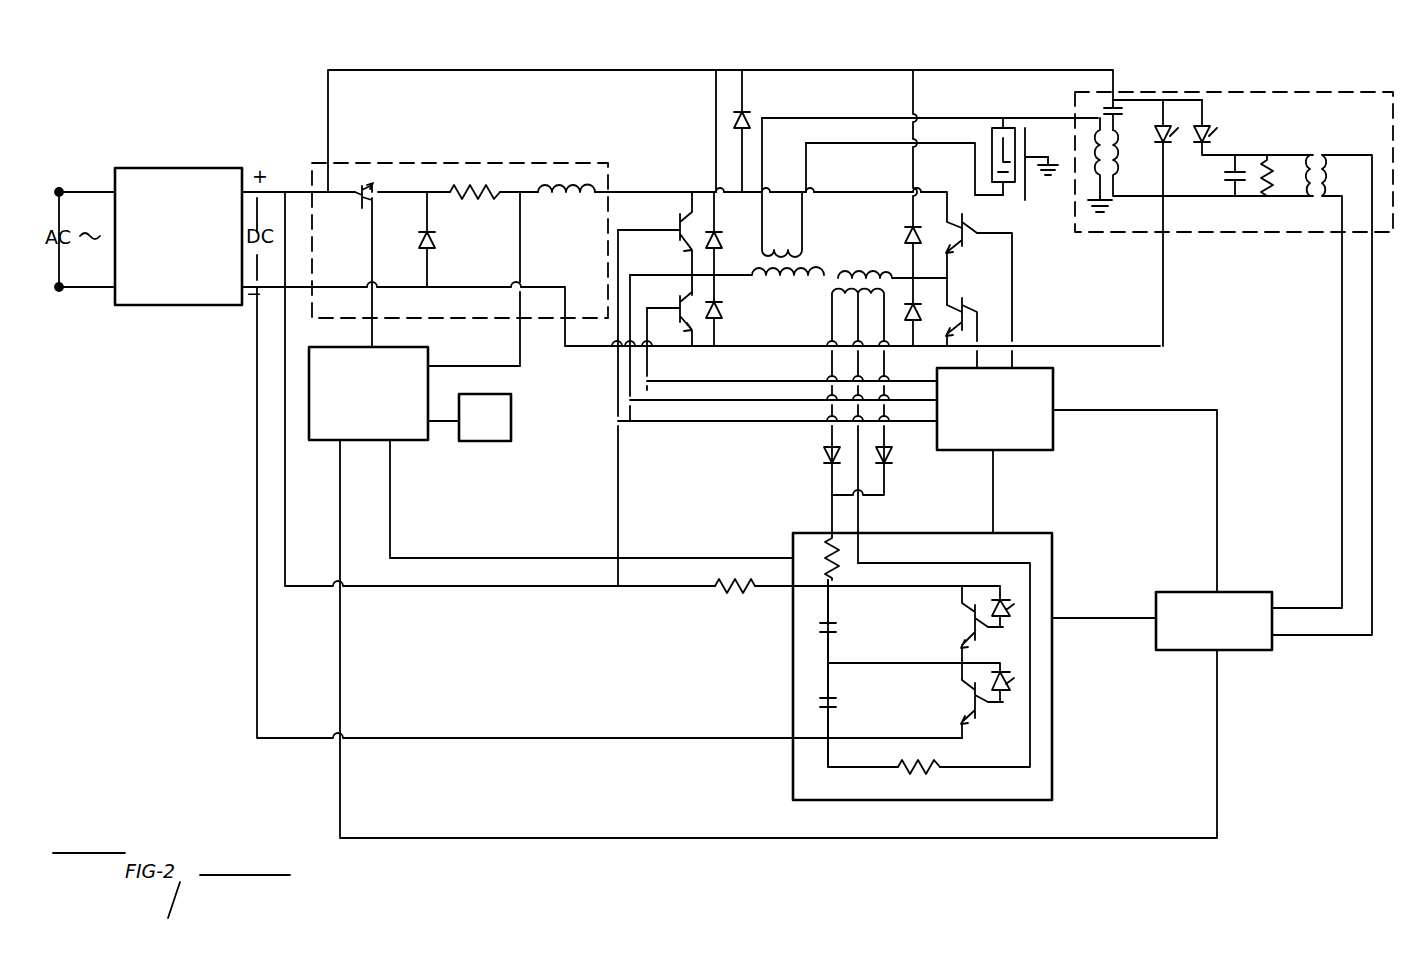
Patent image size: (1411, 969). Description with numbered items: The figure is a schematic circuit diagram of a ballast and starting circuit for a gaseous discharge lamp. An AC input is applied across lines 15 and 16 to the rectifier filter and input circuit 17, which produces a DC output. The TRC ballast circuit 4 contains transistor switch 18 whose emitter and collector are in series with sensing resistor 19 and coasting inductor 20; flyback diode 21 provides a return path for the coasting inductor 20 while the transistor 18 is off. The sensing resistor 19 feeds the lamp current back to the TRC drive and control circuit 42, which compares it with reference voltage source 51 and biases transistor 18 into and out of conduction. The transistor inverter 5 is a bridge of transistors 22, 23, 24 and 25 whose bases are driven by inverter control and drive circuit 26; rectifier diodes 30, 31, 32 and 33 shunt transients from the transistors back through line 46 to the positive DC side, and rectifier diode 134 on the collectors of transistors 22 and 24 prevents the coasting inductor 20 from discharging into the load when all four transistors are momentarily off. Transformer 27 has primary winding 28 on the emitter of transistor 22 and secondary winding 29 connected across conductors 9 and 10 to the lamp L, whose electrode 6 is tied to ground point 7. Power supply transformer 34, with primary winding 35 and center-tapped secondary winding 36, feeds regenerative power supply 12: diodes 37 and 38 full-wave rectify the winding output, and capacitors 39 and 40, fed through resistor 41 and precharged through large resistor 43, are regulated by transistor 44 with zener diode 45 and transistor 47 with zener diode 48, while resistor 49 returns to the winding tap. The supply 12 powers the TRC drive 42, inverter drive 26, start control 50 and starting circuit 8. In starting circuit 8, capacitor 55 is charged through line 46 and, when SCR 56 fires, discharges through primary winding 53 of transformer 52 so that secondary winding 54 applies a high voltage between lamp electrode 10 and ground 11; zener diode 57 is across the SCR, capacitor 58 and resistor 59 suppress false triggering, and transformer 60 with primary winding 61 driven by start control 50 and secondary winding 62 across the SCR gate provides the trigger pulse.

The TRC ballast circuit 4 is at (528, 162).
The transistor inverter 5 is at (849, 222).
The lamp electrode 6 is at (1028, 178).
The ground point 7 is at (1048, 184).
The starting circuit 8 is at (1288, 90).
The conductor 9 is at (998, 202).
The conductor (lamp electrode) 10 is at (1002, 120).
The ground 11 is at (1104, 214).
The regenerative power supply circuit 12 is at (1056, 702).
The AC input line 15 is at (60, 192).
The AC input line 16 is at (62, 290).
The rectifier filter and input circuit 17 is at (176, 168).
The transistor switch 18 is at (370, 190).
The sensing resistor 19 is at (472, 203).
The coasting inductor 20 is at (572, 200).
The flyback diode 21 is at (416, 238).
The transistor 22 is at (670, 222).
The transistor 23 is at (670, 304).
The transistor 24 is at (960, 200).
The transistor 25 is at (964, 296).
The inverter control and drive circuit 26 is at (1058, 432).
The transformer 27 is at (816, 260).
The primary winding 28 is at (784, 280).
The secondary winding 29 is at (796, 222).
The rectifier diode 30 is at (724, 236).
The rectifier diode 31 is at (724, 320).
The rectifier diode 32 is at (902, 228).
The rectifier diode 33 is at (926, 312).
The power supply transformer 34 is at (828, 294).
The primary winding 35 is at (865, 274).
The secondary winding 36 is at (834, 310).
The diode 37 is at (808, 454).
The diode 38 is at (894, 458).
The capacitor 39 is at (830, 630).
The capacitor 40 is at (830, 704).
The resistor 41 is at (824, 554).
The TRC drive and control circuit 42 is at (428, 359).
The resistor 43 is at (754, 590).
The transistor 44 is at (954, 624).
The zener diode 45 is at (1002, 590).
The line 46 is at (531, 70).
The transistor 47 is at (954, 696).
The zener diode 48 is at (1006, 696).
The resistor 49 is at (942, 776).
The start control circuit 50 is at (1180, 592).
The reference voltage source 51 is at (512, 416).
The transformer 52 is at (1112, 117).
The primary winding 53 is at (1122, 176).
The secondary winding 54 is at (1094, 164).
The capacitor 55 is at (1106, 104).
The SCR 56 is at (1212, 128).
The zener diode 57 is at (1170, 146).
The capacitor 58 is at (1232, 200).
The resistor 59 is at (1270, 192).
The transformer 60 is at (1308, 142).
The primary winding 61 is at (1332, 172).
The secondary winding 62 is at (1300, 154).
The rectifier diode 134 is at (748, 118).